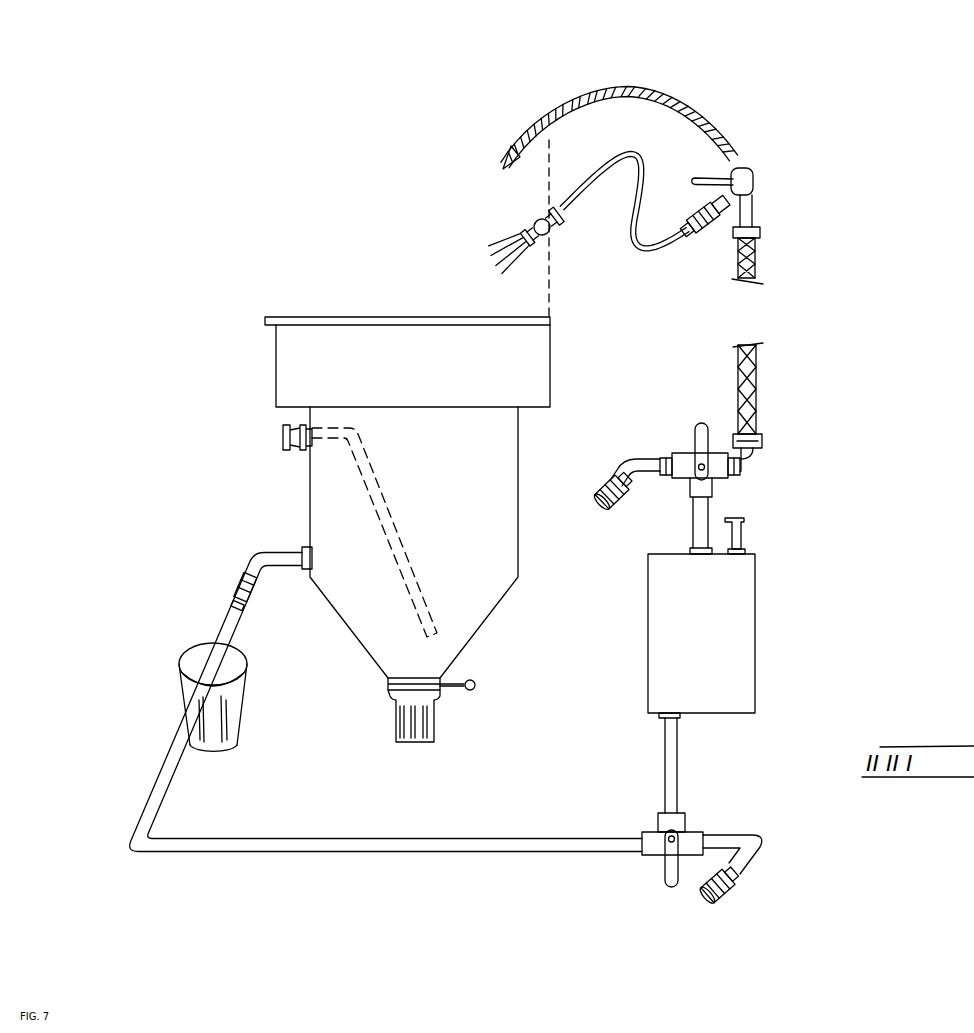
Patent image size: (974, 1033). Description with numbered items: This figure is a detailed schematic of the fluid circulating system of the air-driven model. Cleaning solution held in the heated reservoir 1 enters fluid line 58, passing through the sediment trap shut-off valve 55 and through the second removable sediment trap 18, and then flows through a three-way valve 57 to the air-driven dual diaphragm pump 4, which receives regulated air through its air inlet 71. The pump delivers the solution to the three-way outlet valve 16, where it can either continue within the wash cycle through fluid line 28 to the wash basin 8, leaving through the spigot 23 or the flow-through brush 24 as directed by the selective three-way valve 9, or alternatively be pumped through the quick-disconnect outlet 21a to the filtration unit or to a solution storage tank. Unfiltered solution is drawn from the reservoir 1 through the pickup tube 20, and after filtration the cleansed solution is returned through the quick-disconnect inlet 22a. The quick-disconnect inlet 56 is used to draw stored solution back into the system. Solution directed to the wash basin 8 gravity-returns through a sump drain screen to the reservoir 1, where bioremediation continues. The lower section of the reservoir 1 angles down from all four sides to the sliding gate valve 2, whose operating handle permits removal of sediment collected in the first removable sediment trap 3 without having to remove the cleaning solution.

The reservoir 1 is at (450, 512).
The sliding gate valve 2 is at (453, 679).
The first removable sediment trap 3 is at (432, 732).
The air-driven dual diaphragm pump 4 is at (733, 647).
The wash basin 8 is at (418, 378).
The selective three-way valve 9 is at (700, 176).
The three-way outlet valve 16 is at (697, 430).
The second removable sediment trap 18 is at (232, 730).
The pickup tube 20 is at (418, 578).
The quick-disconnect outlet 21a is at (607, 478).
The quick-disconnect inlet 22a is at (282, 430).
The spigot 23 is at (614, 92).
The flow-through brush 24 is at (637, 250).
The fluid line 28 is at (760, 394).
The sediment trap shut-off valve 55 is at (224, 576).
The quick-disconnect inlet 56 is at (737, 893).
The three-way valve 57 is at (687, 837).
The fluid line 58 is at (271, 553).
The air inlet 71 is at (745, 532).